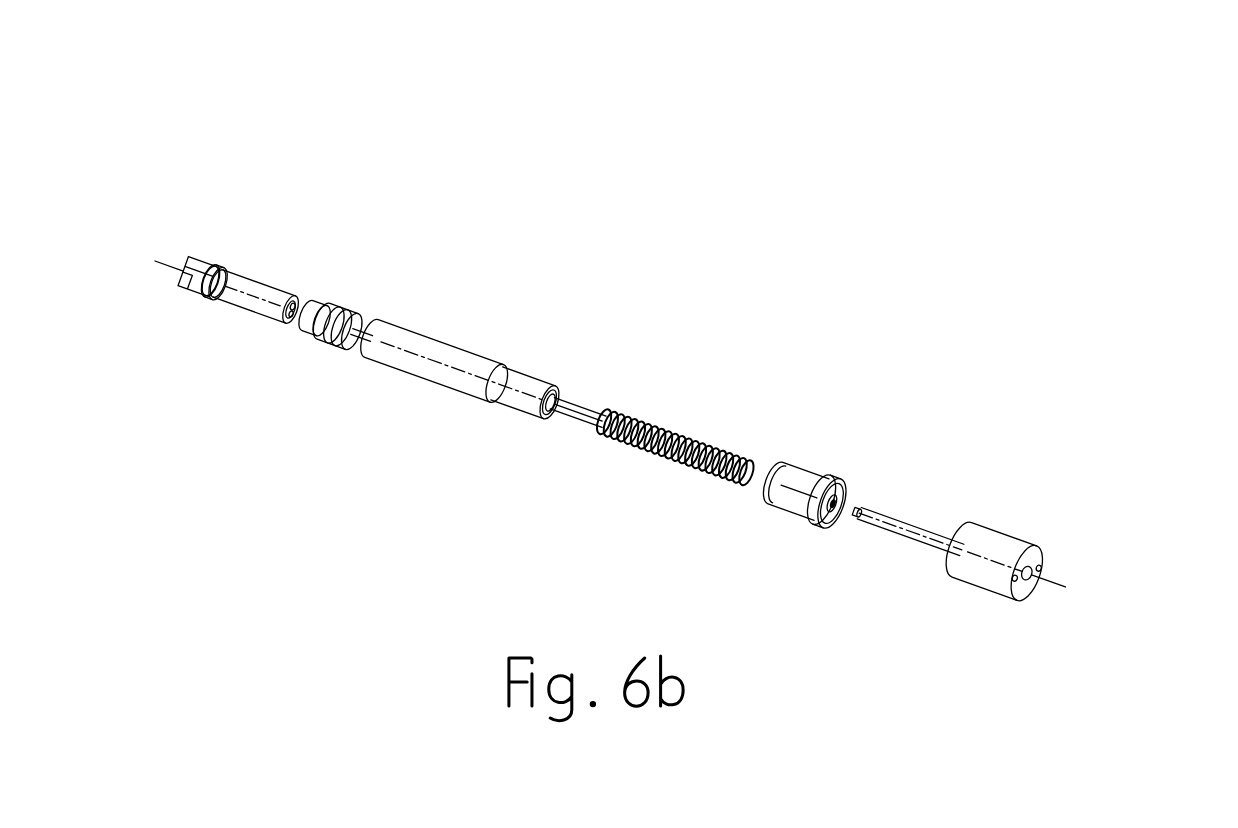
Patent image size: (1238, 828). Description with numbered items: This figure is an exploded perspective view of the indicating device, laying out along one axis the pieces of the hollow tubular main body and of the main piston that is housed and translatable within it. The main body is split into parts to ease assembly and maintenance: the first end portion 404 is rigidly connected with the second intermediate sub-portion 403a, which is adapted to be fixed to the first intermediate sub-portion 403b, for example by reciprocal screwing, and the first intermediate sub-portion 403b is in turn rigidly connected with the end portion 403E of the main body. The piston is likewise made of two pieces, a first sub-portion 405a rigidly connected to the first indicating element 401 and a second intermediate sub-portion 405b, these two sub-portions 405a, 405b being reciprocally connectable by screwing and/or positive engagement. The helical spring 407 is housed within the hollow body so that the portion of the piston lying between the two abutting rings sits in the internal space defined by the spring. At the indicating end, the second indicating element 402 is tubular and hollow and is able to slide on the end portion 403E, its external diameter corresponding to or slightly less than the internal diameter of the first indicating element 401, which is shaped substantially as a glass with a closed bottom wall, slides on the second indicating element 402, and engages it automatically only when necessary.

The first indicating element 401 is at (1012, 538).
The second indicating element 402 is at (817, 473).
The second intermediate sub-portion 403a is at (269, 283).
The first intermediate sub-portion 403b is at (457, 345).
The end portion 403E is at (525, 408).
The first end portion 404 is at (202, 253).
The first sub-portion 405a is at (922, 529).
The second intermediate sub-portion 405b is at (590, 406).
The helical spring 407 is at (708, 440).